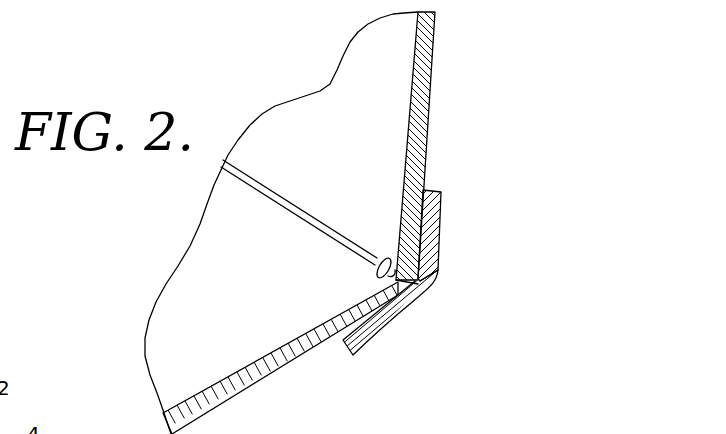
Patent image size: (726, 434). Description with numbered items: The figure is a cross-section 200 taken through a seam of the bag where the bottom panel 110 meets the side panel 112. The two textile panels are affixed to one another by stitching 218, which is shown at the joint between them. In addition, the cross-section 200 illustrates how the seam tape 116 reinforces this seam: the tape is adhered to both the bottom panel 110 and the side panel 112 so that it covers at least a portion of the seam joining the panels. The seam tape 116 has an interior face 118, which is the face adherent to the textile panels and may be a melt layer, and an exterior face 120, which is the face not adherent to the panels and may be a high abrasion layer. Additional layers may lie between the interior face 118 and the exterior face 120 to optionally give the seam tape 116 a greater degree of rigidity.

The bottom panel 110 is at (286, 362).
The side panel 112 is at (436, 90).
The seam tape 116 is at (453, 303).
The interior face 118 is at (403, 218).
The exterior face 120 is at (443, 207).
The cross-section 200 is at (498, 135).
The stitching 218 is at (372, 271).